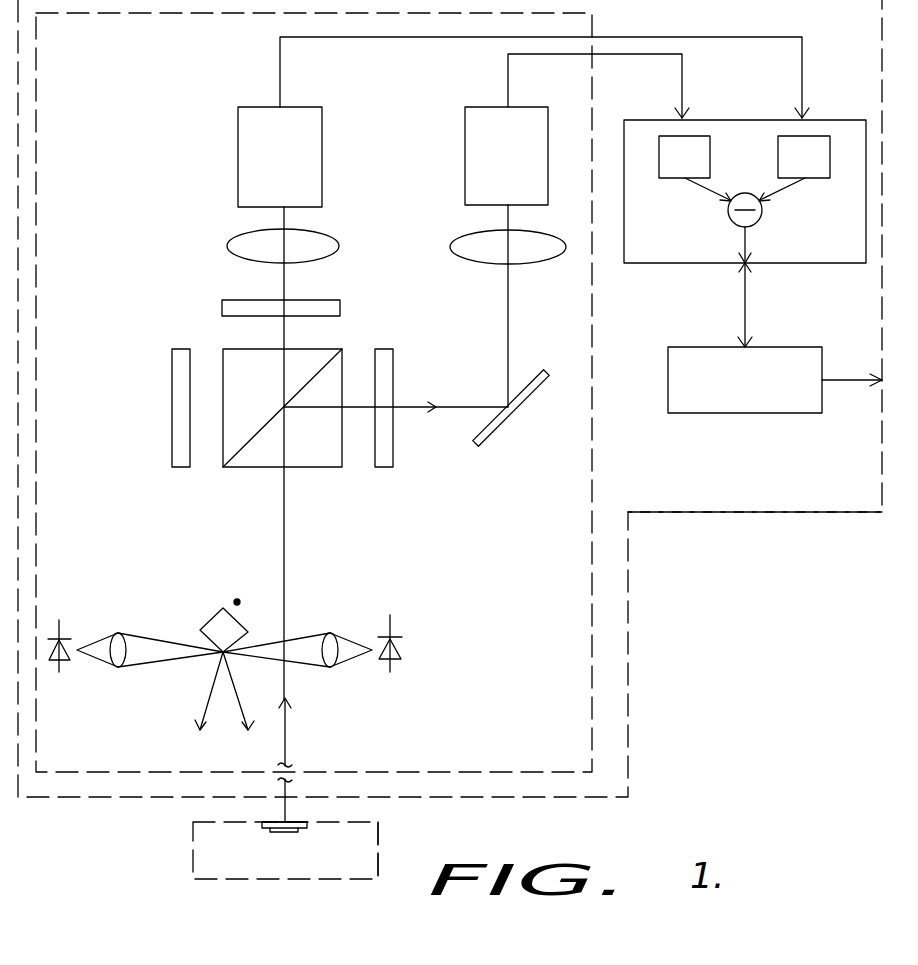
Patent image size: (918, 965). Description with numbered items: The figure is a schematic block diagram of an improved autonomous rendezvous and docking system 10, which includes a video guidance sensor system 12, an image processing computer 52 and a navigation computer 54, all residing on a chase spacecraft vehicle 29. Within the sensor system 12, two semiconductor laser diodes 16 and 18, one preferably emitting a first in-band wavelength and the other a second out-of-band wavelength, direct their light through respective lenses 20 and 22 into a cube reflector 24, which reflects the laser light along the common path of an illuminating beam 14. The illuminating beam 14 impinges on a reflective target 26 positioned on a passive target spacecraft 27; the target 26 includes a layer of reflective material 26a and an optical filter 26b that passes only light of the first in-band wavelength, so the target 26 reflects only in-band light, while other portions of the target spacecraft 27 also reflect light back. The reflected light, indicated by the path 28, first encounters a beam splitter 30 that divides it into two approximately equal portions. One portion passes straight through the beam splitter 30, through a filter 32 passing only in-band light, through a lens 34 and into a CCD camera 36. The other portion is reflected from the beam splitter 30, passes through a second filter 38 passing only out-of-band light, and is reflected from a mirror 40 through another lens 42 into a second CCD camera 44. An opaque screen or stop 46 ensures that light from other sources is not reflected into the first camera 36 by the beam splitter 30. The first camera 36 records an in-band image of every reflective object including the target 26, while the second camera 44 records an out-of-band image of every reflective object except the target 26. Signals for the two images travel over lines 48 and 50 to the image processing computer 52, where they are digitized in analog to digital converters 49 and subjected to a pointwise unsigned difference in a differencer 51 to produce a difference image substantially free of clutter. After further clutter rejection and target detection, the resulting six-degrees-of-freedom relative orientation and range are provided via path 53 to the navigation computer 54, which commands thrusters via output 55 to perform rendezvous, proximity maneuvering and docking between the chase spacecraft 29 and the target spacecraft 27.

The autonomous rendezvous and docking system 10 is at (683, 590).
The video guidance sensor system 12 is at (598, 722).
The illuminating beam 14 is at (208, 698).
The semiconductor laser diode 16 is at (80, 612).
The semiconductor laser diode 18 is at (398, 603).
The lens 20 is at (118, 632).
The lens 22 is at (330, 632).
The cube reflector 24 is at (212, 612).
The reflective target 26 is at (183, 820).
The layer of reflective material 26a is at (288, 832).
The optical filter 26b is at (275, 818).
The passive target spacecraft 27 is at (380, 838).
The reflected light path 28 is at (287, 732).
The chase spacecraft vehicle 29 is at (790, 514).
The beam splitter 30 is at (316, 469).
The filter 32 is at (236, 301).
The lens 34 is at (240, 246).
The CCD camera 36 is at (242, 139).
The second filter 38 is at (388, 358).
The mirror 40 is at (504, 428).
The lens 42 is at (467, 243).
The second CCD camera 44 is at (478, 112).
The opaque screen or stop 46 is at (178, 369).
The line 48 is at (638, 37).
The analog to digital converters 49 is at (778, 144).
The line 50 is at (614, 55).
The differencer 51 is at (762, 223).
The image processing computer 52 is at (790, 264).
The path 53 is at (745, 312).
The navigation computer 54 is at (700, 415).
The output 55 is at (840, 385).